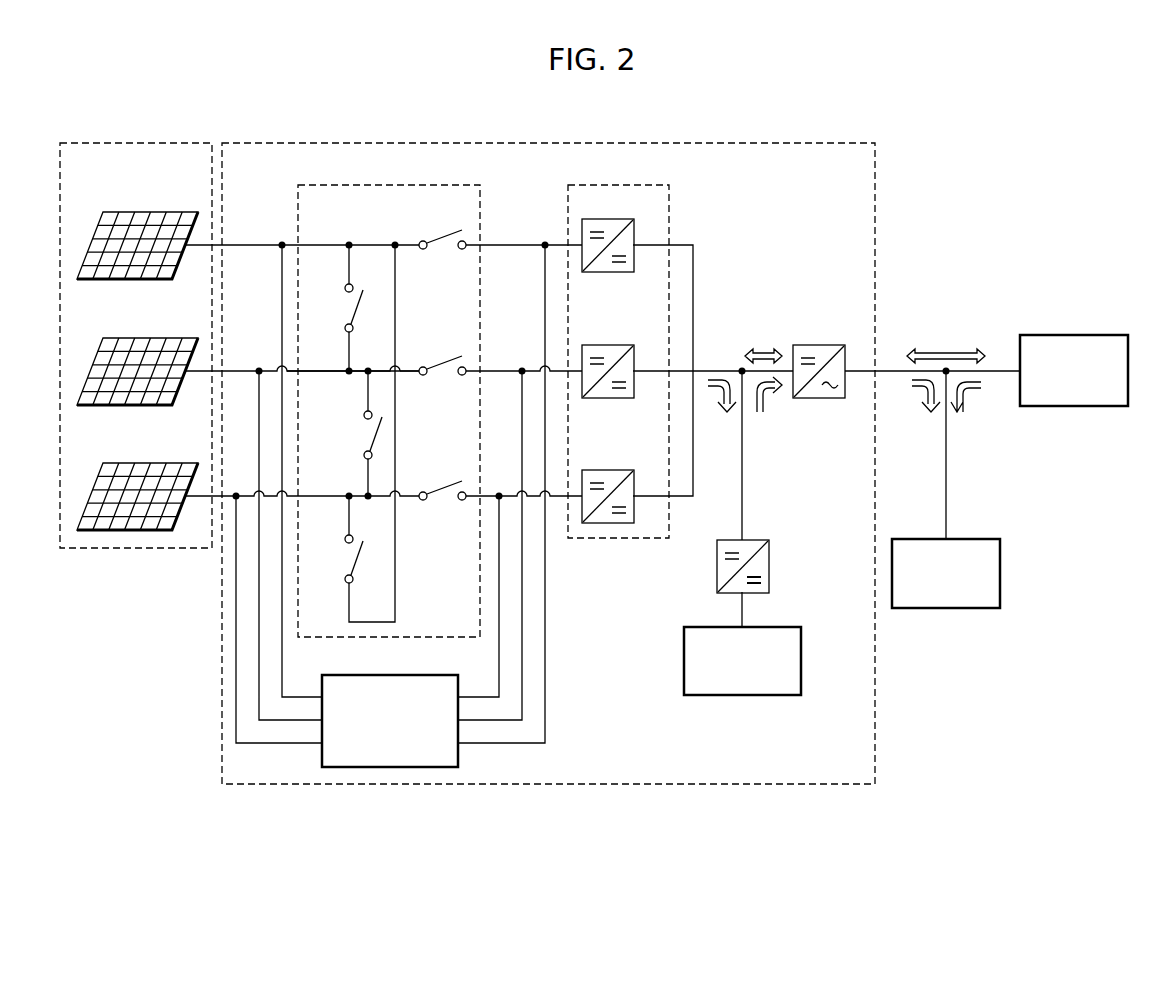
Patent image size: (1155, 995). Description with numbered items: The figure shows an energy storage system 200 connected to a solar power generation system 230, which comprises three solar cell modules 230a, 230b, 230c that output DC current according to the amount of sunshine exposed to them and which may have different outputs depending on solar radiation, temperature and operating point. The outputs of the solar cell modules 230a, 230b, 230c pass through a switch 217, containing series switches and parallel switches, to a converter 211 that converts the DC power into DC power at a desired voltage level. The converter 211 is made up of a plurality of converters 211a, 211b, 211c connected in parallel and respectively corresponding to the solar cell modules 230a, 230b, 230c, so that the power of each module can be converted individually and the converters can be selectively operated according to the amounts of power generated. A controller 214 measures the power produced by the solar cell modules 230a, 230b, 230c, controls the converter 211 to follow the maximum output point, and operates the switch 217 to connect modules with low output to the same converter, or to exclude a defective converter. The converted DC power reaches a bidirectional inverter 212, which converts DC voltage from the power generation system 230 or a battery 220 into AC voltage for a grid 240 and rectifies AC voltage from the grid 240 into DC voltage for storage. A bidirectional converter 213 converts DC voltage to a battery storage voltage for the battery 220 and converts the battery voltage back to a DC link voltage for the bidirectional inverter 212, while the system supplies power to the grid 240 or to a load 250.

The energy storage system 200 is at (556, 146).
The converter 211 is at (611, 185).
The converter 211a is at (600, 222).
The converter 211b is at (600, 347).
The converter 211c is at (600, 472).
The bidirectional inverter 212 is at (810, 346).
The bidirectional converter 213 is at (752, 540).
The controller 214 is at (404, 676).
The switch 217 is at (396, 185).
The battery 220 is at (752, 628).
The solar power generation system 230 is at (141, 146).
The solar cell module 230a is at (140, 213).
The solar cell module 230b is at (140, 339).
The solar cell module 230c is at (140, 464).
The grid 240 is at (1092, 335).
The load 250 is at (965, 540).